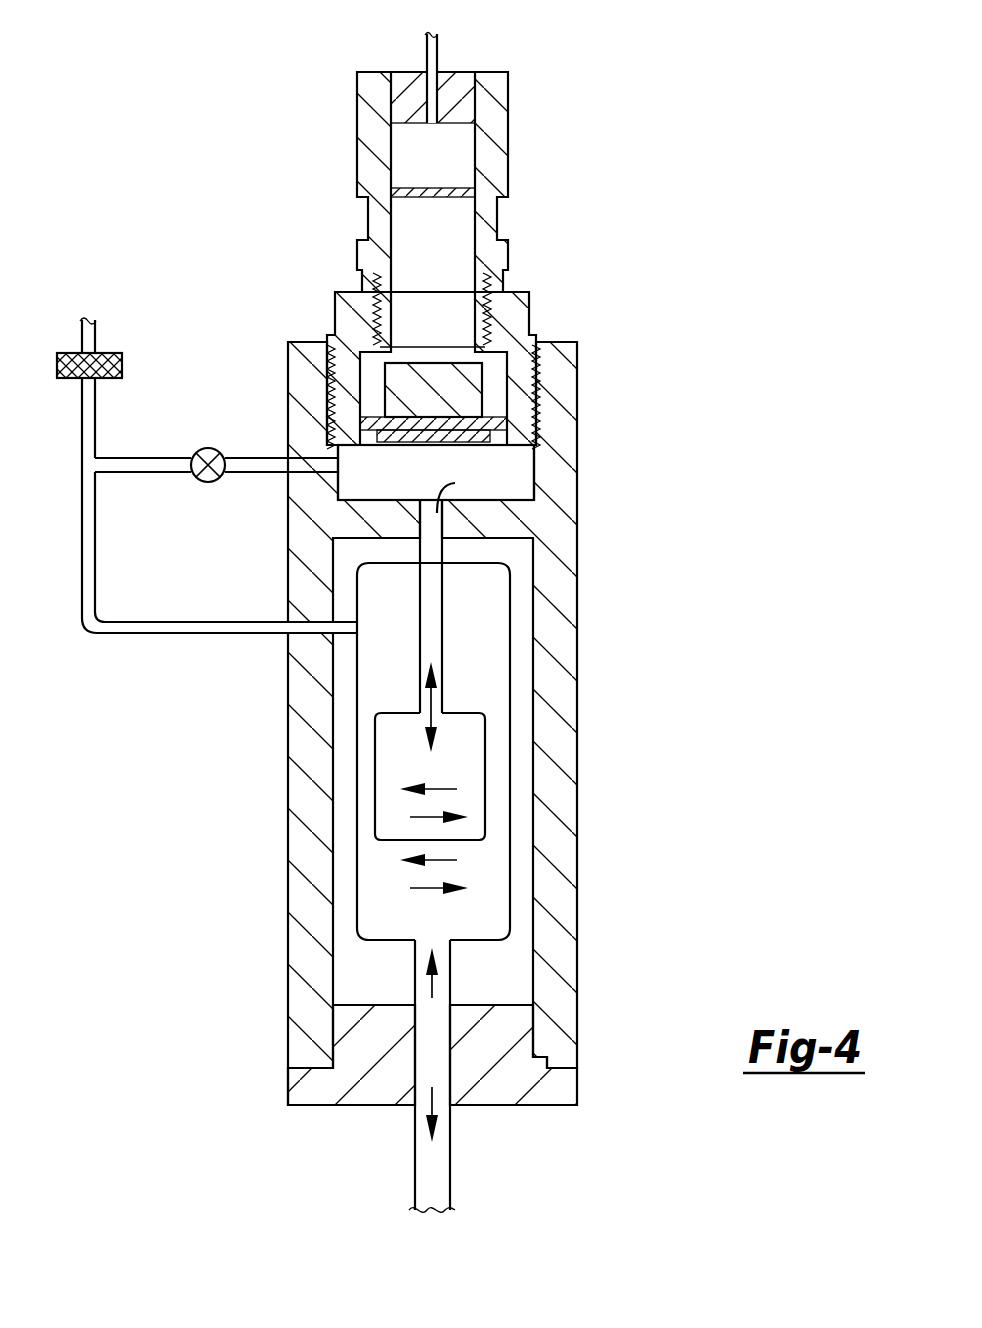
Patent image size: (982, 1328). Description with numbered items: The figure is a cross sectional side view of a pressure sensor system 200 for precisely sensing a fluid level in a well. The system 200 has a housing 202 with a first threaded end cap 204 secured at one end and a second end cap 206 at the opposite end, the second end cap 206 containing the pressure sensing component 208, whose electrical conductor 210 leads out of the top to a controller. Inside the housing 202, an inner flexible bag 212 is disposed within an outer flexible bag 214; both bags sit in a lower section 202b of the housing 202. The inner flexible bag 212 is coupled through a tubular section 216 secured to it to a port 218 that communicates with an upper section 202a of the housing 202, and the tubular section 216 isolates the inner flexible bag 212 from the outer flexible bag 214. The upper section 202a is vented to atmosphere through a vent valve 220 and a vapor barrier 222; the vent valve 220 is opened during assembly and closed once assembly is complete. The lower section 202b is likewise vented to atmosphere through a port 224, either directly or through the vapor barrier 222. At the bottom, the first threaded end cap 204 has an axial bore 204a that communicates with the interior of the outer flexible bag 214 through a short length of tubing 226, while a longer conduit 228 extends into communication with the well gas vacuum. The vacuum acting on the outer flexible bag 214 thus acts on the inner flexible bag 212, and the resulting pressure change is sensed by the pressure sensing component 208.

The system 200 is at (220, 86).
The housing 202 is at (537, 518).
The upper section of the housing 202a is at (493, 462).
The lower section of the housing 202b is at (392, 970).
The first threaded end cap 204 is at (503, 1087).
The axial bore 204a is at (413, 1069).
The second end cap 206 is at (352, 312).
The pressure sensing component 208 is at (468, 388).
The lead wire 210 is at (435, 50).
The inner flexible bag 212 is at (477, 782).
The outer flexible bag 214 is at (507, 903).
The tubular section 216 is at (440, 655).
The port 218 is at (455, 483).
The vent valve 220 is at (210, 481).
The vapor barrier 222 is at (122, 362).
The port 224 is at (318, 628).
The short length of tubing 226 is at (443, 987).
The conduit 228 is at (443, 1188).